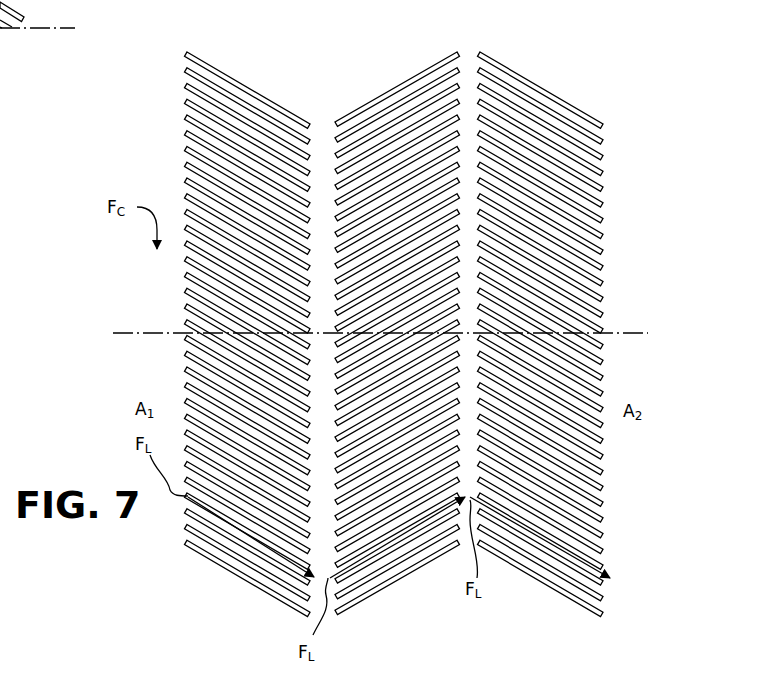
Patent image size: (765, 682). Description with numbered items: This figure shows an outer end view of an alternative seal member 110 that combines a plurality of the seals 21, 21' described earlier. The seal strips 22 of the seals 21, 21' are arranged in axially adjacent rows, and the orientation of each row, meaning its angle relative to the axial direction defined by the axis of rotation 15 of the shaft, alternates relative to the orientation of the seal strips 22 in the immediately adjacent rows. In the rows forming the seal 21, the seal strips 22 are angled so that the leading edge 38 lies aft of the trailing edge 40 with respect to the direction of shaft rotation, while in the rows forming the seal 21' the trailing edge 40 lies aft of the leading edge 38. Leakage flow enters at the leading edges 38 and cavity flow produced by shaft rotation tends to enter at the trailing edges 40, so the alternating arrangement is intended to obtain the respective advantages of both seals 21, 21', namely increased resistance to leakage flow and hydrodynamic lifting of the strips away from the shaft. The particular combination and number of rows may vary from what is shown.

The seal member 110 is at (172, 29).
The seal 21 is at (397, 324).
The seal 21' is at (541, 317).
The leading edge 38 is at (185, 85).
The trailing edge 40 is at (306, 157).
The seal strips 22 is at (187, 543).
The axis of rotation 15 is at (622, 332).